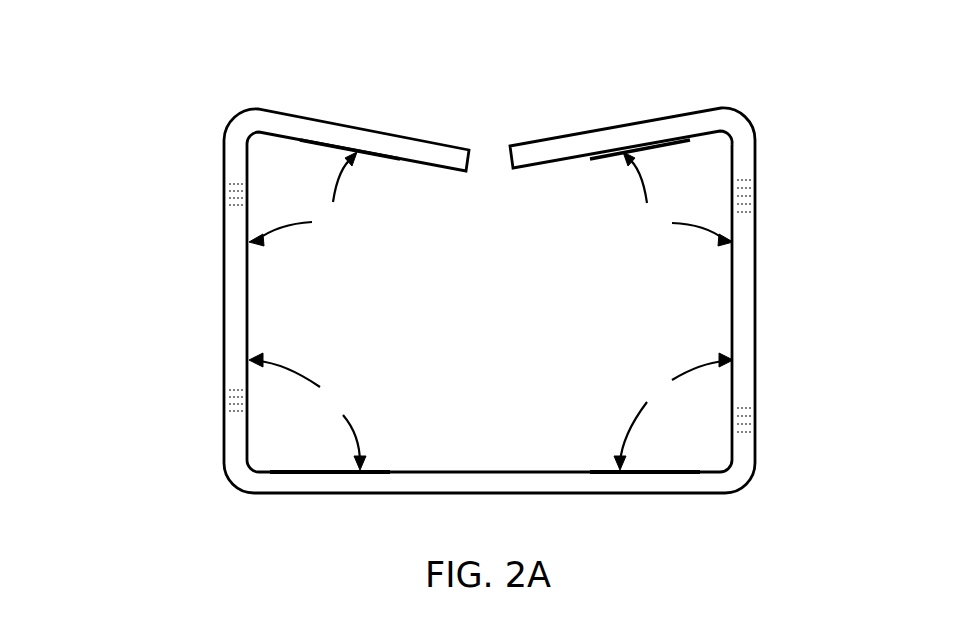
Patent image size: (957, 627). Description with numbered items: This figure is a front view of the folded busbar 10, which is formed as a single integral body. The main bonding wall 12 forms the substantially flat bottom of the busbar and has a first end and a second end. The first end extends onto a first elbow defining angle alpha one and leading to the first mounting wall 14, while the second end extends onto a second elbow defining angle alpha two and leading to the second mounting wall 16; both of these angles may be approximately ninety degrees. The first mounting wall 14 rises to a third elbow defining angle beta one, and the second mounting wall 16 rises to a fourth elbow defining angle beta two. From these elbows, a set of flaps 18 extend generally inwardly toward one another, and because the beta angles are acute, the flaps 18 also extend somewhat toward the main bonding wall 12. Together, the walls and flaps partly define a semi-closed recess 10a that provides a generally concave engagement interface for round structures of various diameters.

The folded busbar 10 is at (177, 64).
The semi-closed recess 10a is at (262, 325).
The main bonding wall 12 is at (357, 494).
The first mounting wall 14 is at (752, 302).
The second mounting wall 16 is at (228, 281).
The flaps 18 is at (402, 133).